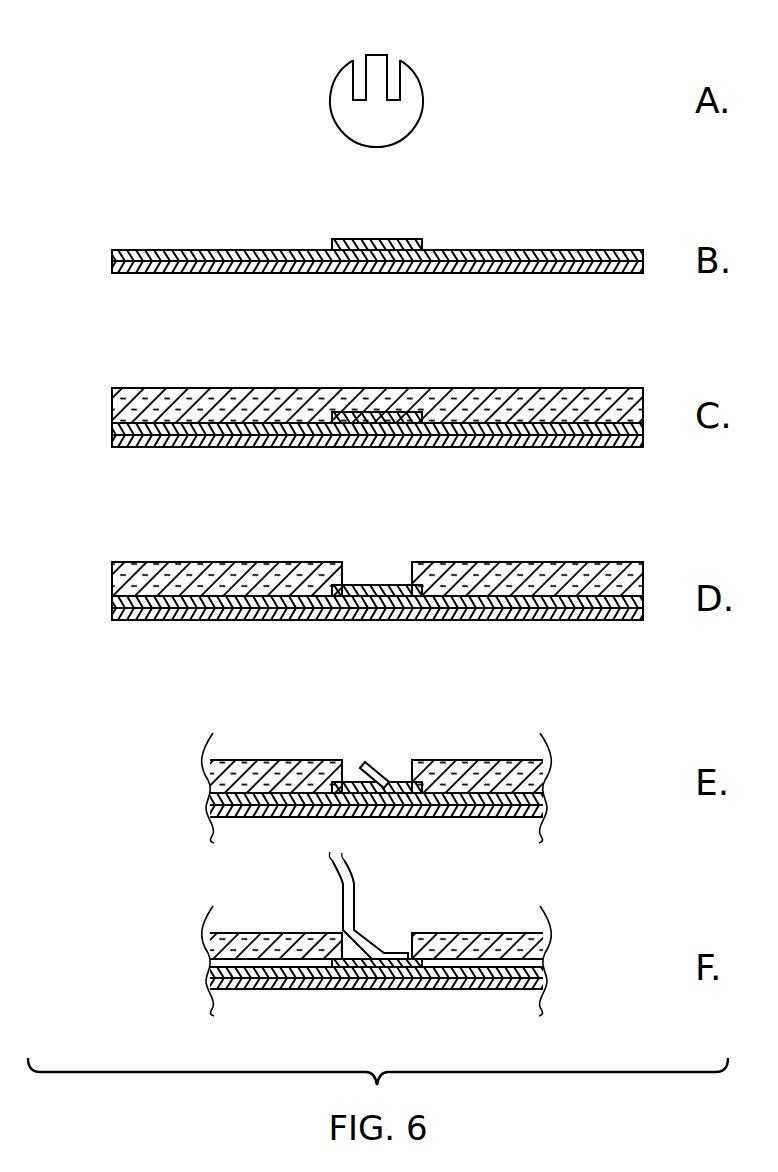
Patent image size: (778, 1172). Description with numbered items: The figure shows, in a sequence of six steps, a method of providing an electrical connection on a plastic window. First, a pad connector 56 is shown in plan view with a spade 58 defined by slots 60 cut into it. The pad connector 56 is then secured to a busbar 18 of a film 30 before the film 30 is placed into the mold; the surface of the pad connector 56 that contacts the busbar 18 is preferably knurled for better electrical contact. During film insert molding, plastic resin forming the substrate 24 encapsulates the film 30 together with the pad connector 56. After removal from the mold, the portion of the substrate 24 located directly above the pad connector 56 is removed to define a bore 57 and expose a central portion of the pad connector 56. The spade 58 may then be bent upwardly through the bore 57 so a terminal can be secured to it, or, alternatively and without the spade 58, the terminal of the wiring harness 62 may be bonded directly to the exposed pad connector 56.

The pad connector 56 is at (393, 118).
The spade 58 is at (379, 62).
The slots 60 is at (360, 84).
The busbar 18 is at (562, 250).
The film 30 is at (573, 273).
The substrate 24 is at (193, 414).
The bore 57 is at (374, 572).
The wiring harness 62 is at (372, 942).